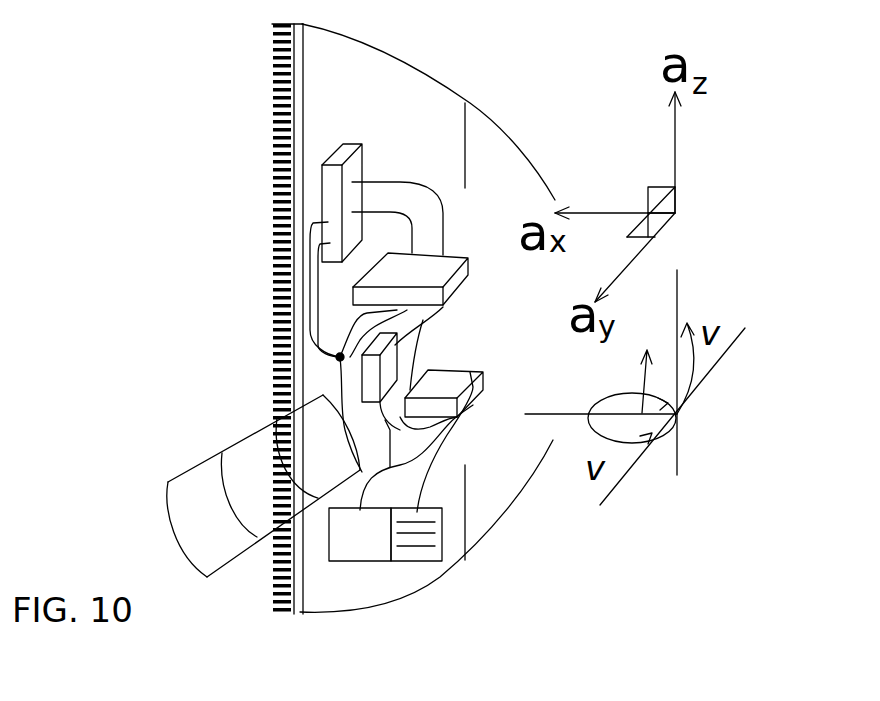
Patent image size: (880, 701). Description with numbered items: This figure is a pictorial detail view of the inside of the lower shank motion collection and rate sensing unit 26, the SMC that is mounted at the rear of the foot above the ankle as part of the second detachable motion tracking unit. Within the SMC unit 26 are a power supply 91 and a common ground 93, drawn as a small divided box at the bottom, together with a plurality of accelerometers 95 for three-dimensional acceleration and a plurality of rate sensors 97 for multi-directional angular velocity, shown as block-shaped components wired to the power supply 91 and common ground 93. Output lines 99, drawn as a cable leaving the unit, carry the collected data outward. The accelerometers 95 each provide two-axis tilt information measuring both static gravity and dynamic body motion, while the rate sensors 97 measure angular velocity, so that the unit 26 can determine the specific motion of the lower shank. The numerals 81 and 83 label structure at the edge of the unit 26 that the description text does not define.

The lower shank motion collection and rate sensing unit 26 is at (432, 160).
The mounting panel 81 is at (77, 0).
The heat sink fins 83 is at (212, 306).
The power supply 91 is at (367, 565).
The common ground 93 is at (427, 550).
The accelerometers 95 is at (362, 161).
The rate sensors 97 is at (398, 334).
The output lines 99 is at (228, 447).